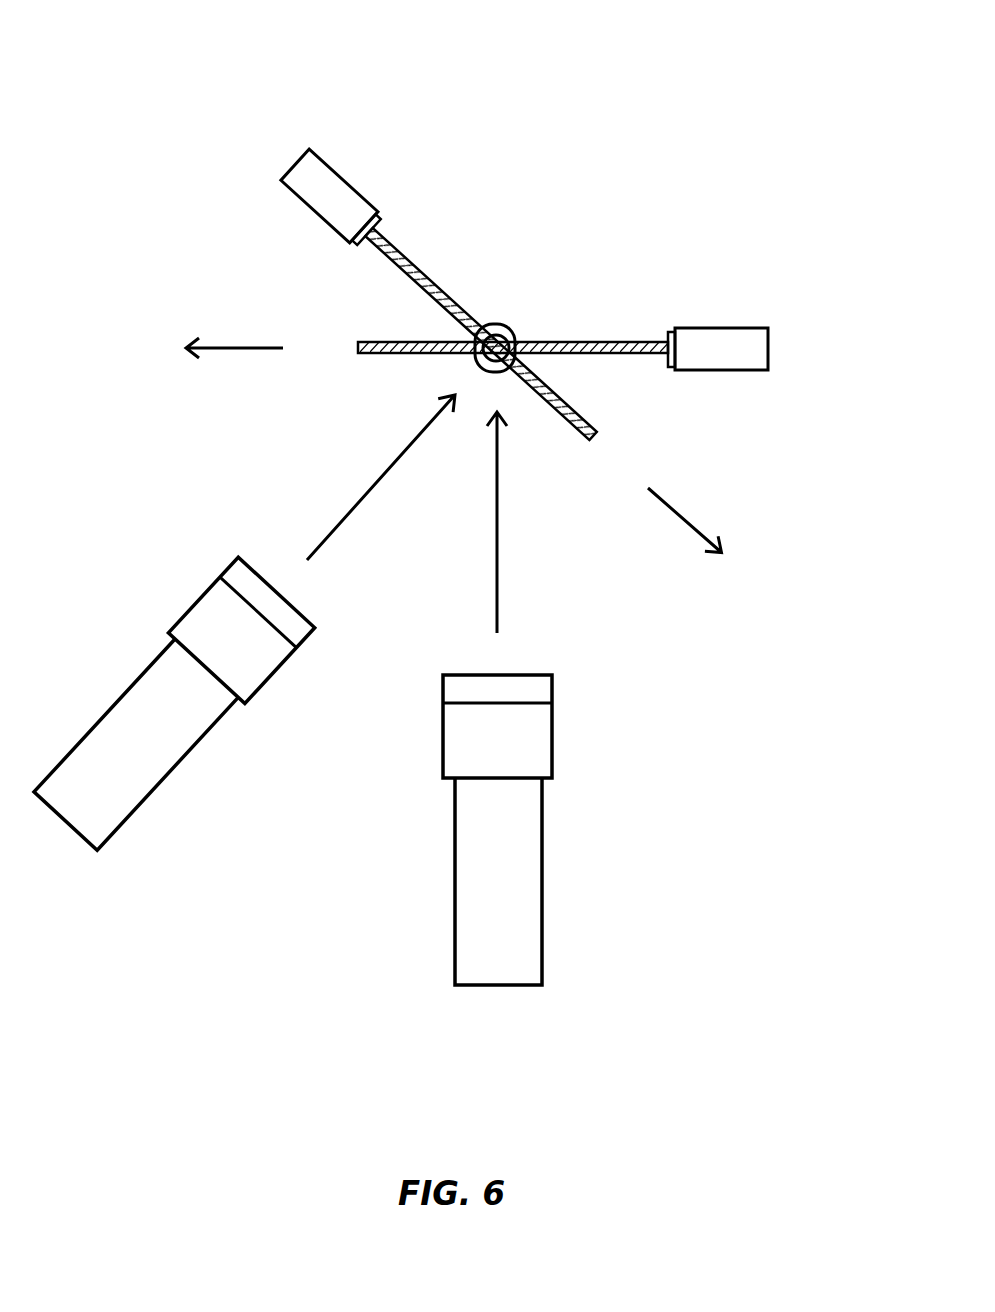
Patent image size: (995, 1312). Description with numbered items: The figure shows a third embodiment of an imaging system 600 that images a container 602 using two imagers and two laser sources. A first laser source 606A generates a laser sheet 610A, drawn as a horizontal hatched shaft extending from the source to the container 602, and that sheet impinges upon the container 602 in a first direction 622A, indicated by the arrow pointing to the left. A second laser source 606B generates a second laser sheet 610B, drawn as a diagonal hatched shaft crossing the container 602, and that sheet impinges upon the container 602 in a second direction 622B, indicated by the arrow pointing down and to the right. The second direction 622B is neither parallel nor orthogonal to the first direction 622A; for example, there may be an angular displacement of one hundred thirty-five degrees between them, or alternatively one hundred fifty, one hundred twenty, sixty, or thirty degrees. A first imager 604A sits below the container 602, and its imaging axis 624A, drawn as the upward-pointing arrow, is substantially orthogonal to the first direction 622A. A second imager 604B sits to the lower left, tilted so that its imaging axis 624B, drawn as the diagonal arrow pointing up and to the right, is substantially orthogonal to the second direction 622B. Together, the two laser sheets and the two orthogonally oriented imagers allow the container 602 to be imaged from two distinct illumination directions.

The imaging system 600 is at (117, 40).
The container 602 is at (504, 325).
The first imager 604A is at (543, 825).
The second imager 604B is at (202, 742).
The first laser source 606A is at (770, 336).
The second laser source 606B is at (347, 176).
The laser sheet 610A is at (580, 342).
The laser sheet 610B is at (415, 266).
The first direction 622A is at (231, 352).
The second direction 622B is at (675, 507).
The imaging axis 624A is at (498, 497).
The imaging axis 624B is at (362, 502).